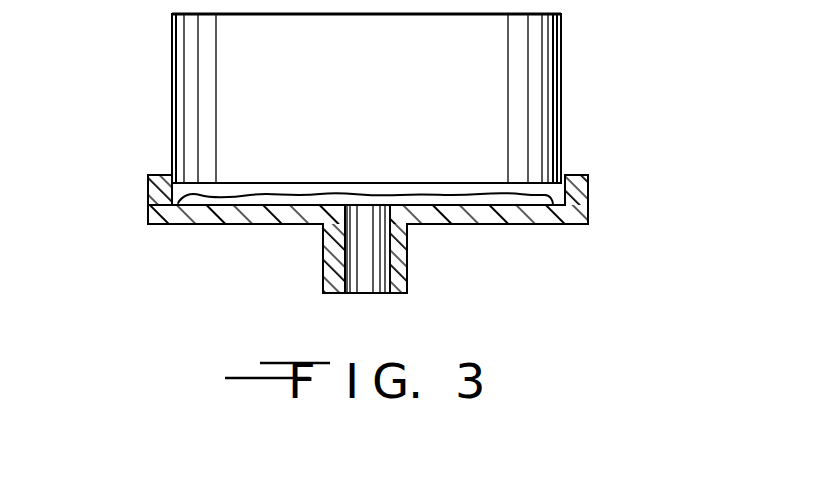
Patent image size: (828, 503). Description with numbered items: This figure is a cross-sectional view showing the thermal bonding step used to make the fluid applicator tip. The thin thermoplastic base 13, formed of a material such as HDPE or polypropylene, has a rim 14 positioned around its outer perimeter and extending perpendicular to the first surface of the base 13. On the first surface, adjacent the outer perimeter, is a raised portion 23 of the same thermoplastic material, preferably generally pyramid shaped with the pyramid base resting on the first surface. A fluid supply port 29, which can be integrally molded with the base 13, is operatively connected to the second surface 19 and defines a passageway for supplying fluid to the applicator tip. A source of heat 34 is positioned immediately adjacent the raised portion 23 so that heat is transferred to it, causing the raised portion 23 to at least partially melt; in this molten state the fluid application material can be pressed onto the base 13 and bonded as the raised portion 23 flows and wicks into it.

The source of heat 34 is at (561, 63).
The base 13 is at (588, 217).
The rim 14 is at (147, 180).
The second surface 19 is at (512, 225).
The raised portion 23 is at (190, 203).
The fluid supply port 29 is at (407, 268).